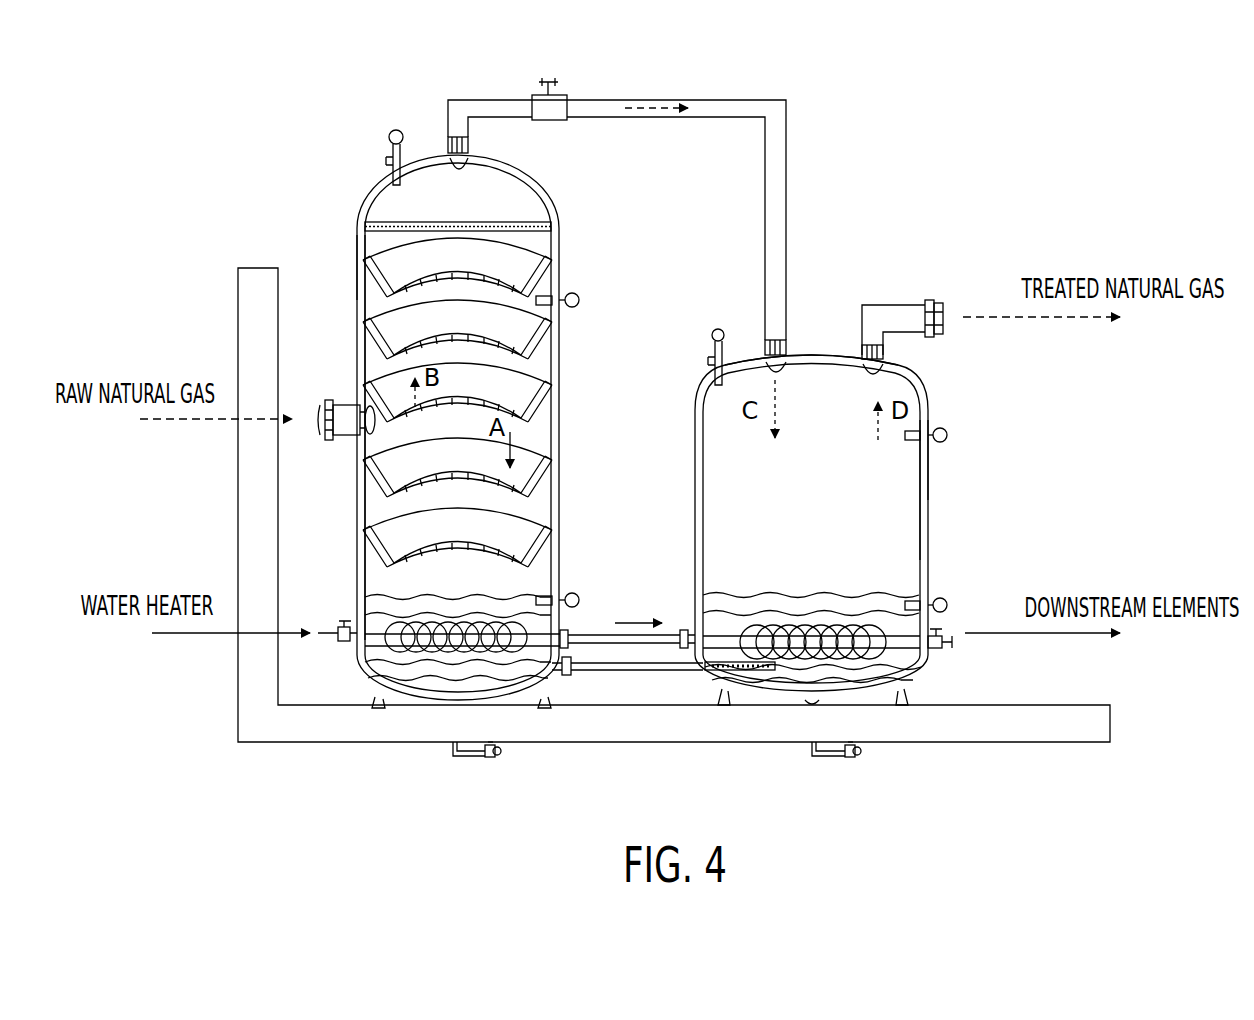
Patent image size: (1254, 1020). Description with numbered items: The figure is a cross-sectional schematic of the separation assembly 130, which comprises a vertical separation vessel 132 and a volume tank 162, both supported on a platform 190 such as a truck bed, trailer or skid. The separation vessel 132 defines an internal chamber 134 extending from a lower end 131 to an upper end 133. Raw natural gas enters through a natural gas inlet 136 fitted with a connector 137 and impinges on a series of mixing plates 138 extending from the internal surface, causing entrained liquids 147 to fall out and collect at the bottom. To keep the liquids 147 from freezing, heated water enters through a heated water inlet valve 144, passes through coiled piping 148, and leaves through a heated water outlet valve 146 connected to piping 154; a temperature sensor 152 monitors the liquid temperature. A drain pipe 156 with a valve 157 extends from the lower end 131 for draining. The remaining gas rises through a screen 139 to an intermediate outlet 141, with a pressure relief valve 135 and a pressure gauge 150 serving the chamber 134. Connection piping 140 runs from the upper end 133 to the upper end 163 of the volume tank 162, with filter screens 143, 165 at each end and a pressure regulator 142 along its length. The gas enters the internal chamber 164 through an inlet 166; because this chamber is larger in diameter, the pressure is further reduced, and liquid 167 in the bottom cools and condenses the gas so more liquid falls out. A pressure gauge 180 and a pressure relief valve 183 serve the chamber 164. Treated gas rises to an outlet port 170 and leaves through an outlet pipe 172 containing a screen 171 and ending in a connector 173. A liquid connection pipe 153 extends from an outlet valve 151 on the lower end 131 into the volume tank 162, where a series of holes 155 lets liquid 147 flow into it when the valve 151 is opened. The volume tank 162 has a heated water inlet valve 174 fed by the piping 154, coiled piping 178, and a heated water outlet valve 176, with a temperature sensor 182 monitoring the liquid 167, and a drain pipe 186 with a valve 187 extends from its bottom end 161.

The separation assembly 130 is at (948, 154).
The lower end 131 is at (365, 690).
The separation vessel 132 is at (350, 226).
The upper end 133 is at (372, 187).
The internal chamber 134 is at (515, 211).
The pressure relief valve 135 is at (390, 152).
The natural gas inlet 136 is at (345, 405).
The connector 137 is at (327, 436).
The mixing plates 138 is at (545, 268).
The screen 139 is at (556, 227).
The connection piping 140 is at (480, 99).
The intermediate outlet 141 is at (466, 168).
The pressure regulator 142 is at (541, 99).
The filter screen 143 is at (452, 136).
The heated water inlet valve 144 is at (336, 639).
The heated water outlet valve 146 is at (575, 627).
The liquids 147 is at (375, 601).
The piping 148 is at (425, 653).
The pressure gauge 150 is at (580, 300).
The outlet valve 151 is at (566, 677).
The temperature sensor 152 is at (573, 593).
The liquid connection pipe 153 is at (620, 672).
The piping 154 is at (655, 646).
The holes 155 is at (738, 672).
The drain pipe 156 is at (455, 757).
The valve 157 is at (491, 758).
The bottom end 161 is at (922, 682).
The volume tank 162 is at (946, 416).
The upper end 163 is at (800, 358).
The internal chamber 164 is at (906, 525).
The filter screen 165 is at (768, 344).
The inlet 166 is at (786, 373).
The liquid 167 is at (905, 598).
The outlet port 170 is at (868, 386).
The screen 171 is at (886, 356).
The outlet pipe 172 is at (882, 305).
The connector 173 is at (935, 300).
The heated water inlet valve 174 is at (684, 628).
The heated water outlet valve 176 is at (945, 649).
The piping 178 is at (862, 658).
The pressure gauge 180 is at (948, 435).
The temperature sensor 182 is at (948, 605).
The pressure relief valve 183 is at (713, 354).
The drain pipe 186 is at (818, 757).
The valve 187 is at (852, 758).
The platform 190 is at (1095, 730).